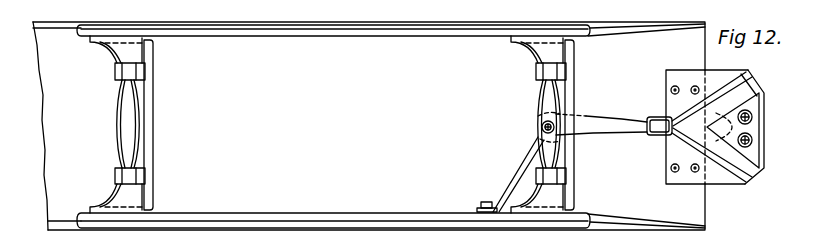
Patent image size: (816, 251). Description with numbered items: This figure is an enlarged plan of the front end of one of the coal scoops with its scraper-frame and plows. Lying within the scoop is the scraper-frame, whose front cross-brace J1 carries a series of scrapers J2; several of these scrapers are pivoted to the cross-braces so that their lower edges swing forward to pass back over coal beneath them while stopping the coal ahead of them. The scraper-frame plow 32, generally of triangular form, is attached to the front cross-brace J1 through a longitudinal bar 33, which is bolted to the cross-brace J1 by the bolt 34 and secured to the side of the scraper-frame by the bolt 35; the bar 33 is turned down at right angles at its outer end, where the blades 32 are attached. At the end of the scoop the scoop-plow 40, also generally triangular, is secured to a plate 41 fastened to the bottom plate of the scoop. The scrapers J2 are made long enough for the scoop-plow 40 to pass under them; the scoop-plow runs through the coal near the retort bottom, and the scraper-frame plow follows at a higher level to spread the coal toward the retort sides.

The cross-brace J1 is at (115, 117).
The scrapers J2 is at (593, 172).
The scraper-frame plow 32 is at (756, 70).
The longitudinal bar 33 is at (636, 116).
The bolt 34 is at (542, 129).
The bolt 35 is at (504, 174).
The scoop-plow 40 is at (763, 164).
The plate 41 is at (718, 185).